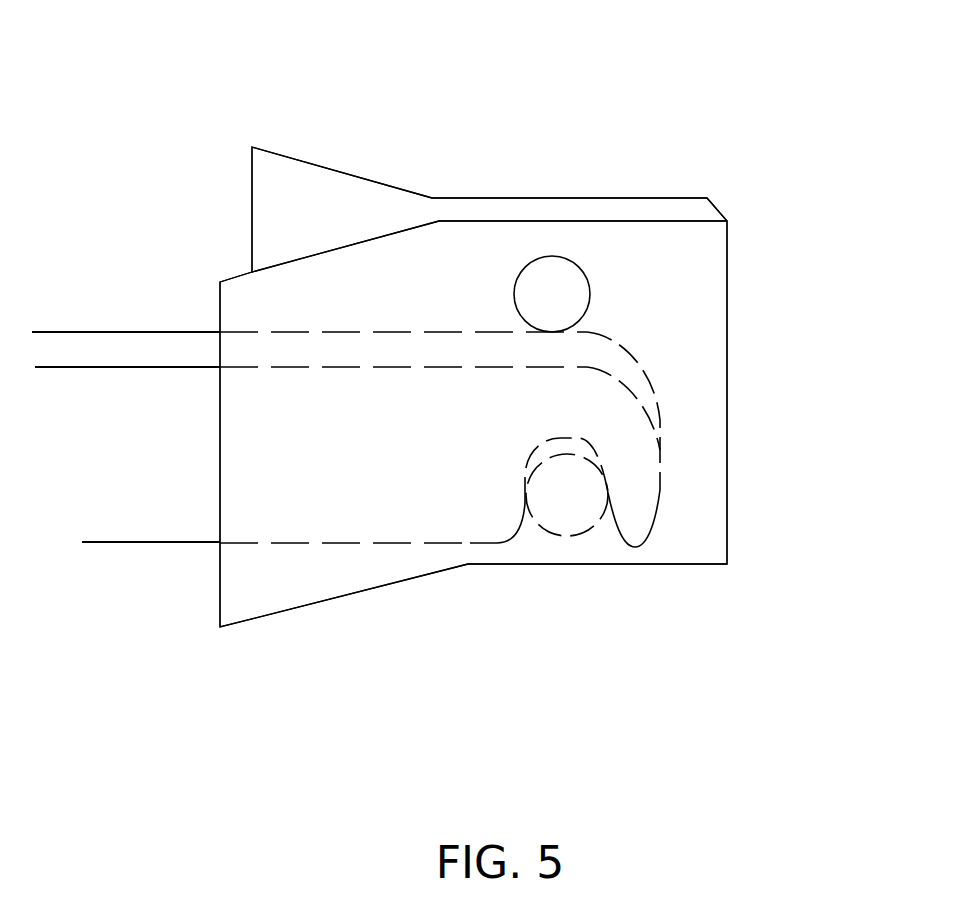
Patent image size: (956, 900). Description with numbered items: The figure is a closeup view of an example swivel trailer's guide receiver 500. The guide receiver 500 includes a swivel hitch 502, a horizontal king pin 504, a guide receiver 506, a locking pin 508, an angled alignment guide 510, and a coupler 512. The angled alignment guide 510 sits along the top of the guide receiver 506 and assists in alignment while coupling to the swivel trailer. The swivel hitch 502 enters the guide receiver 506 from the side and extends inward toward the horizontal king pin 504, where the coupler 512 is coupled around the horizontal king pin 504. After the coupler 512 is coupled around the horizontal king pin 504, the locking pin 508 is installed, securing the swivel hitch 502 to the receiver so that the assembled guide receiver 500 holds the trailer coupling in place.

The guide receiver 500 is at (248, 33).
The swivel hitch 502 is at (346, 437).
The horizontal king pin 504 is at (582, 522).
The guide receiver 506 is at (727, 327).
The locking pin 508 is at (572, 260).
The angled alignment guide 510 is at (222, 218).
The coupler 512 is at (525, 545).